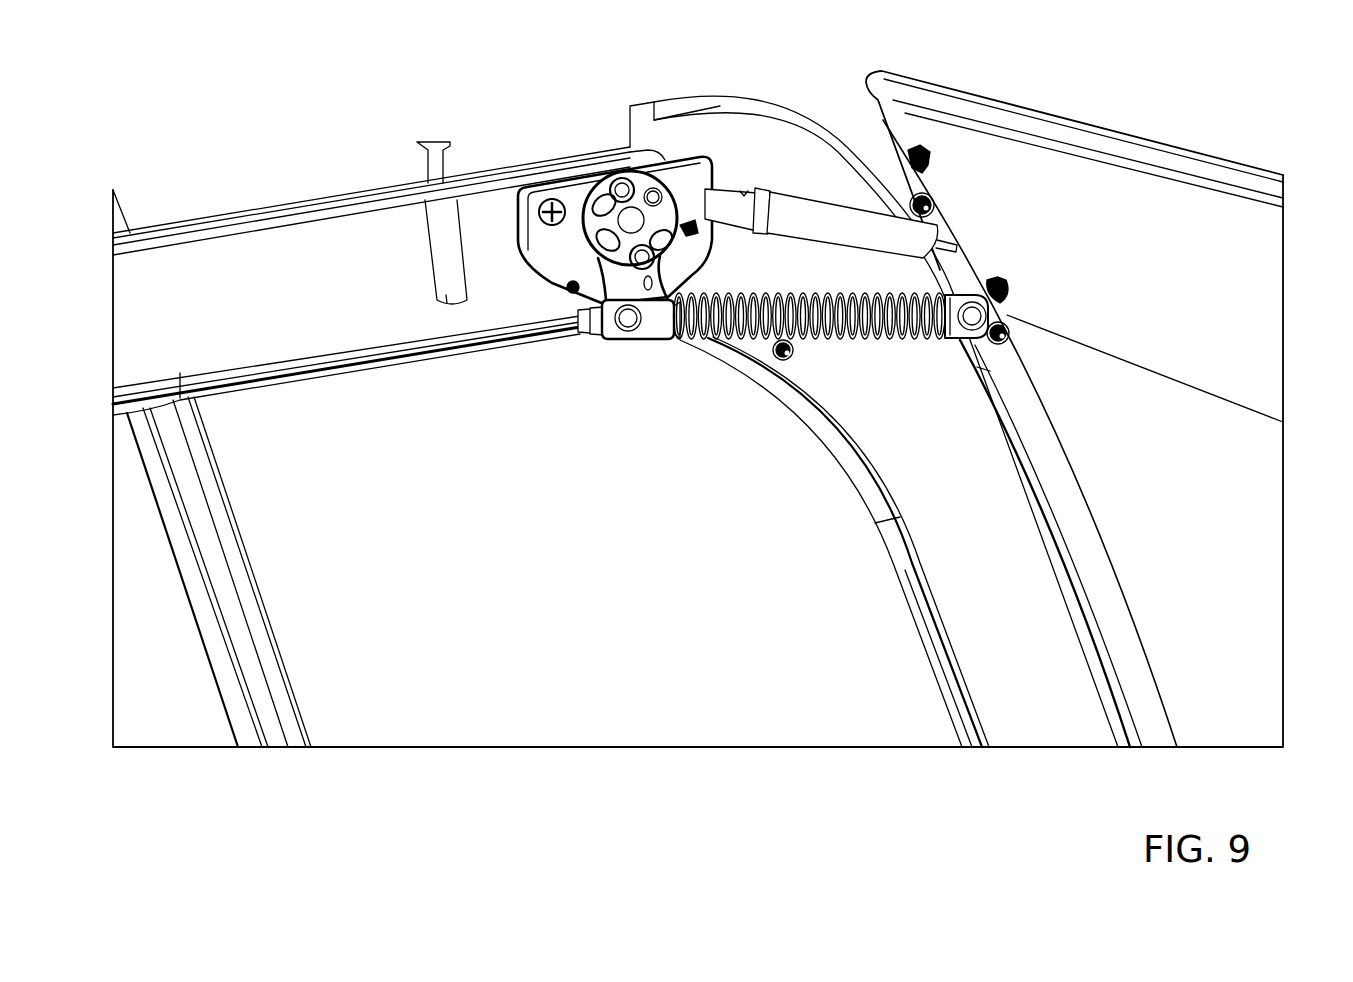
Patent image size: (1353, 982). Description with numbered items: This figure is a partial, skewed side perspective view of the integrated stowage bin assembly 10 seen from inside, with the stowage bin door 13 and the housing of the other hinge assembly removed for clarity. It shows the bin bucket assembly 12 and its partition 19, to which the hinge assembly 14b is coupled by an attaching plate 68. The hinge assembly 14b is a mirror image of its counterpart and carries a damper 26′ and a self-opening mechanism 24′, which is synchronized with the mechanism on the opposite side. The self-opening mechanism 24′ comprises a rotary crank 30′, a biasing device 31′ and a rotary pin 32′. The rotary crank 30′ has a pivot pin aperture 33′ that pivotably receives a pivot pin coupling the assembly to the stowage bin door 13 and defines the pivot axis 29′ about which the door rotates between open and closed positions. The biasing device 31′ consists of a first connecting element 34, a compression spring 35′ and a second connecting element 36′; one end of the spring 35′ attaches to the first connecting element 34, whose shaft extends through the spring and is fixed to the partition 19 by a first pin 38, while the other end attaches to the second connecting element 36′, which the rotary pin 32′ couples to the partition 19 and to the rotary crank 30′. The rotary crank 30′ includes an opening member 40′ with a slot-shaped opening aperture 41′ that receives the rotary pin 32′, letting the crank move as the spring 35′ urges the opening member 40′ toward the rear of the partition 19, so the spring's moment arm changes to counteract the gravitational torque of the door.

The integrated stowage bin assembly 10 is at (1007, 72).
The bin bucket assembly 12 is at (205, 268).
The stowage bin door 13 is at (1070, 113).
The hinge assembly 14b is at (800, 170).
The partition 19 is at (290, 263).
The self-opening mechanism 24′ is at (740, 392).
The damper 26′ is at (847, 222).
The pivot axis 29′ is at (575, 238).
The rotary crank 30′ is at (578, 308).
The biasing device 31′ is at (852, 375).
The rotary pin 32′ is at (600, 332).
The pivot pin aperture 33′ is at (632, 180).
The first connecting element 34 is at (1000, 347).
The spring 35′ is at (907, 340).
The second connecting element 36′ is at (653, 345).
The first pin 38 is at (985, 316).
The opening member 40′ is at (640, 343).
The opening aperture 41′ is at (708, 188).
The attaching plate 68 is at (572, 192).